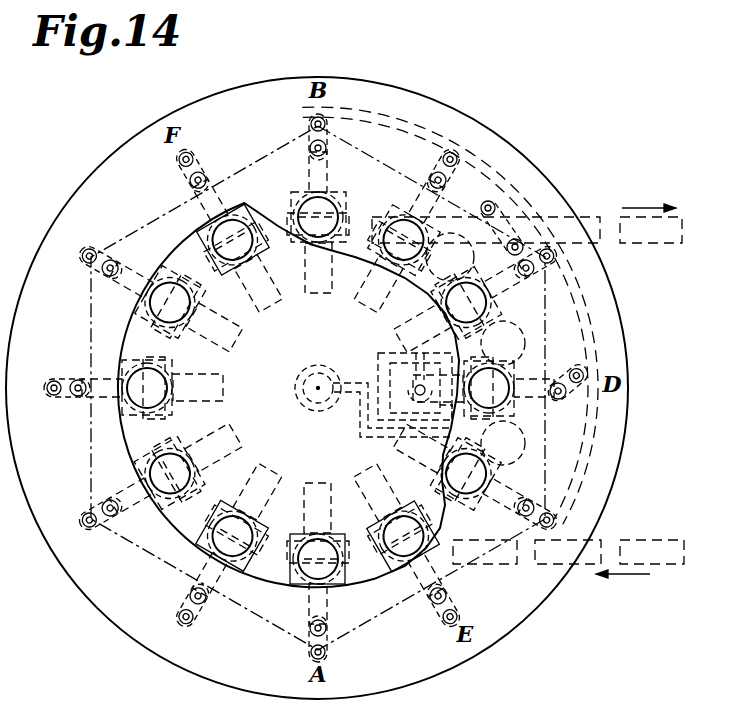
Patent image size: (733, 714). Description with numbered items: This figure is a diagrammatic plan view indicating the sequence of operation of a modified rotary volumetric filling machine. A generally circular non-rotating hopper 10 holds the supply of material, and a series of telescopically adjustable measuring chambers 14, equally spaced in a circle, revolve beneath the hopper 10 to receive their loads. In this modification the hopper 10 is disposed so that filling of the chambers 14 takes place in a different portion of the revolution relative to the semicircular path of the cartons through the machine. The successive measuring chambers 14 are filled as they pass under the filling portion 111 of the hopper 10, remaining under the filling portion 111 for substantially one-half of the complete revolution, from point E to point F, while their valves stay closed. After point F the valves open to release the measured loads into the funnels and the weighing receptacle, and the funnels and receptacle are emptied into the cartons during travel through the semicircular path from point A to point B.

The hopper 10 is at (178, 246).
The measuring chambers 14 is at (317, 376).
The filling portion 111 is at (163, 528).